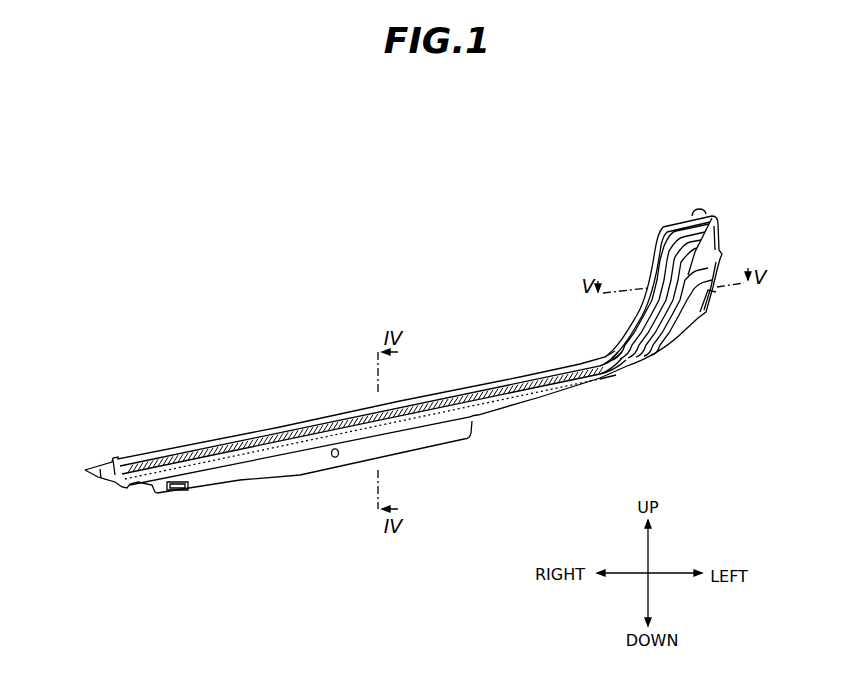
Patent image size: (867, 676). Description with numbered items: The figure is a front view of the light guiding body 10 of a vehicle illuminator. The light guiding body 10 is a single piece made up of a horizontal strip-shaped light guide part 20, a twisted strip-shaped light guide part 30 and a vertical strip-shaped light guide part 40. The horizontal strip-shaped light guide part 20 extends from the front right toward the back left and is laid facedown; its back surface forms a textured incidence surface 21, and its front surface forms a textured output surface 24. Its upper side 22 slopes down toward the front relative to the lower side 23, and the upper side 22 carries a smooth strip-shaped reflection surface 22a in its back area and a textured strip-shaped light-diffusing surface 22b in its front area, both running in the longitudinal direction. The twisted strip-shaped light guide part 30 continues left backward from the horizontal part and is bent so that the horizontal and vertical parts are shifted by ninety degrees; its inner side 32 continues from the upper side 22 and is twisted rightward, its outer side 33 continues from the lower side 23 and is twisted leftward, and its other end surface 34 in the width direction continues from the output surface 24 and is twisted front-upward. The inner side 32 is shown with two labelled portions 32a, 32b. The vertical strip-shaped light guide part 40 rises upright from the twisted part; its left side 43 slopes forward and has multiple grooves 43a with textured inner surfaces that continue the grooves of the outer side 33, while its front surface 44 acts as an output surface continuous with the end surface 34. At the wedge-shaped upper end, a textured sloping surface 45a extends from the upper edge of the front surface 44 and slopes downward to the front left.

The light guiding body 10 is at (343, 296).
The horizontal strip-shaped light guide part 20 is at (263, 462).
The incidence surface 21 is at (99, 476).
The upper side 22 is at (233, 388).
The reflection surface 22a is at (170, 452).
The light-diffusing surface 22b is at (208, 452).
The lower side 23 is at (132, 477).
The output surface 24 is at (293, 448).
The twisted strip-shaped light guide part 30 is at (625, 377).
The inner side 32 is at (541, 308).
The lower rear wall line 32a is at (599, 363).
The upper rear wall line 32b is at (610, 358).
The outer side 33 is at (645, 364).
The other end surface in the width direction 34 is at (609, 374).
The vertical strip-shaped light guide part 40 is at (729, 253).
The left side 43 is at (697, 252).
The grooves 43a is at (698, 327).
The front surface 44 is at (652, 262).
The sloping surface 45a is at (681, 224).